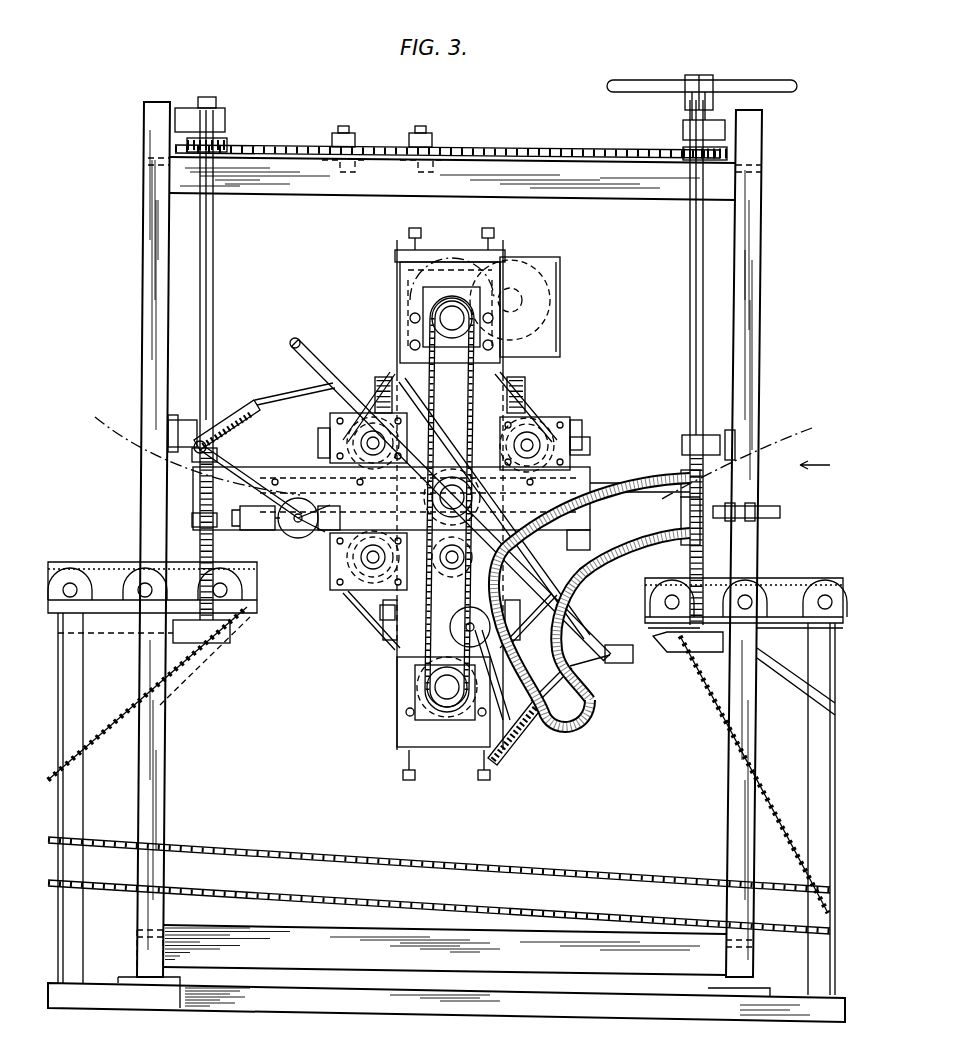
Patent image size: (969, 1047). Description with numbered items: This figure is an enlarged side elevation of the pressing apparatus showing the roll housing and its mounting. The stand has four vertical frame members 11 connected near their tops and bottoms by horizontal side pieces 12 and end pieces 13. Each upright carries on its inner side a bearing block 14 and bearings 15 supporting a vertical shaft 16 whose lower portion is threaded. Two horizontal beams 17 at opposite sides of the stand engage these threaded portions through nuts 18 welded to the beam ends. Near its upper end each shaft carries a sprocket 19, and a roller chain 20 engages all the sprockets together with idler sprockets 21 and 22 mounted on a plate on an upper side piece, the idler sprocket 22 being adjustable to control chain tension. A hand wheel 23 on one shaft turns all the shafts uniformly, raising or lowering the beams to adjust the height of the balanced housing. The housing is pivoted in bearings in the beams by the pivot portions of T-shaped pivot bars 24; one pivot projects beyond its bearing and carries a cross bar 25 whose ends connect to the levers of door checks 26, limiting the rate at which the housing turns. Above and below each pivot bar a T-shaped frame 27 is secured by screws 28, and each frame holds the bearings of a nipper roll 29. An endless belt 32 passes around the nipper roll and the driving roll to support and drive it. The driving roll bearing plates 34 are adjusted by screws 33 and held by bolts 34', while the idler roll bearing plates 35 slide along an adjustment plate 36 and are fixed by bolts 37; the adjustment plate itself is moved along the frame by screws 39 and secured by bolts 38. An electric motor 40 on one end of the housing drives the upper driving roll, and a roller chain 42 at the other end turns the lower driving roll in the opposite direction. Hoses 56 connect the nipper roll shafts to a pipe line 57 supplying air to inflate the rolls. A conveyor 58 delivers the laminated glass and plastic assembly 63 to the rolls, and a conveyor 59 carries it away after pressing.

The vertical frame member 11 is at (143, 306).
The horizontal side piece 12 is at (256, 202).
The end piece 13 is at (150, 160).
The bearing block 14 is at (198, 645).
The bearing 15 is at (185, 420).
The vertical shaft 16 is at (214, 282).
The horizontal beam 17 is at (655, 483).
The nut 18 is at (190, 462).
The sprocket 19 is at (220, 140).
The roller chain 20 is at (518, 147).
The idler sprocket 21 is at (432, 145).
The idler sprocket 22 is at (355, 145).
The hand wheel 23 is at (607, 86).
The T-shaped pivot bar 24 is at (638, 548).
The cross bar 25 is at (342, 392).
The door check 26 is at (292, 540).
The T-shaped frame 27 is at (305, 548).
The screw 28 is at (320, 540).
The nipper roll 29 is at (366, 382).
The endless belt 32 is at (525, 405).
The screw 33 is at (486, 232).
The bearing plate 34 is at (417, 459).
The bolt 34' is at (478, 319).
The bearing plate 35 is at (318, 440).
The adjustment plate 36 is at (570, 420).
The bolt 37 is at (350, 430).
The bolt 38 is at (432, 425).
The screw 39 is at (390, 372).
The electric motor 40 is at (560, 272).
The roller chain 42 is at (397, 700).
The hose 56 is at (635, 500).
The pipe line 57 is at (770, 518).
The conveyor 58 is at (824, 564).
The conveyor 59 is at (82, 547).
The laminated glass and plastic assembly 63 is at (110, 425).